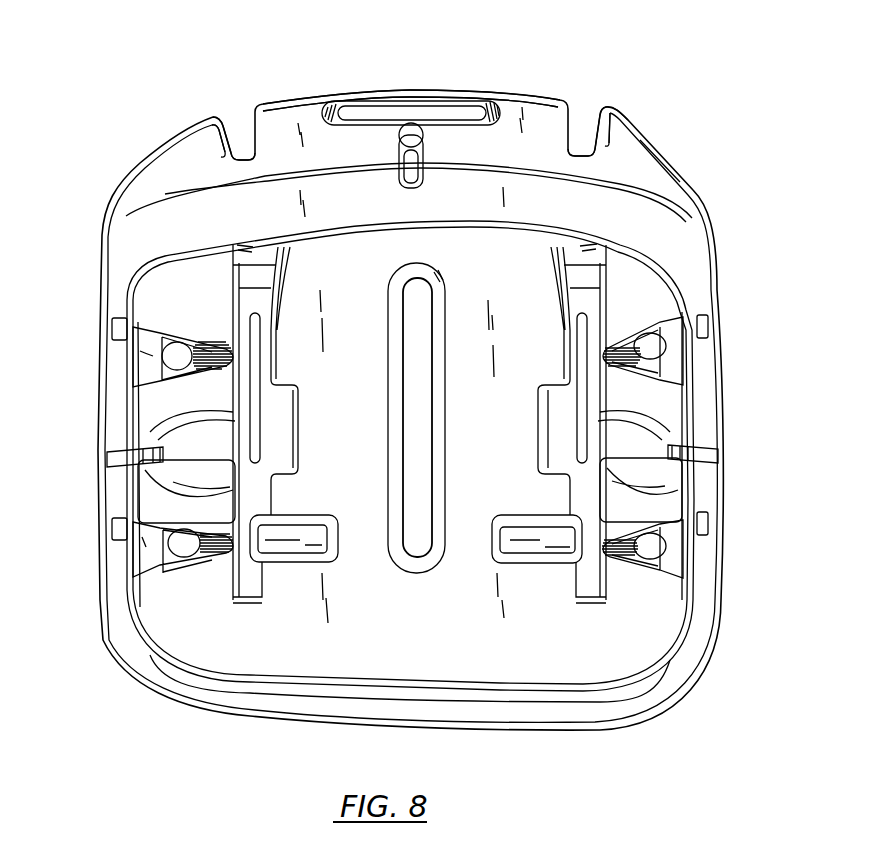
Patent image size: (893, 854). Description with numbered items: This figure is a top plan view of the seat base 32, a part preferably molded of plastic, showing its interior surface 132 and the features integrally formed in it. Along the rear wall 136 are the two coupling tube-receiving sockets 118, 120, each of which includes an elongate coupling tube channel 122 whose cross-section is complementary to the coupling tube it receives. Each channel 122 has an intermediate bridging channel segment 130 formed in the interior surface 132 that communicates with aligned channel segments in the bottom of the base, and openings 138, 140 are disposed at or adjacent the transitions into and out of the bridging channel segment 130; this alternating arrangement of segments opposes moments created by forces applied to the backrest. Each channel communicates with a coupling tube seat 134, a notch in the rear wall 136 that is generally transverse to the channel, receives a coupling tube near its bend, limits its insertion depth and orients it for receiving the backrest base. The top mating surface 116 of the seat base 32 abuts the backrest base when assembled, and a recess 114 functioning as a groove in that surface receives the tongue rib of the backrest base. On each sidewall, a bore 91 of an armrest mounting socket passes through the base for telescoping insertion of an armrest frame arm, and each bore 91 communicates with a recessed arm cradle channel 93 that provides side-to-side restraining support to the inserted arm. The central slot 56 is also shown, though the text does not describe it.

The seat base 32 is at (670, 112).
The central slot 56 is at (418, 556).
The bore 91 is at (172, 357).
The recessed arm cradle channel 93 is at (124, 375).
The recess 114 is at (462, 107).
The top mating surface 116 is at (522, 102).
The coupling tube-receiving socket 118 is at (603, 81).
The coupling tube-receiving socket 120 is at (227, 90).
The coupling tube channel 122 is at (253, 93).
The intermediate bridging channel segment 130 is at (596, 298).
The interior surface 132 is at (580, 658).
The coupling tube seat 134 is at (222, 128).
The rear wall 136 is at (307, 100).
The opening 138 is at (595, 268).
The opening 140 is at (588, 498).